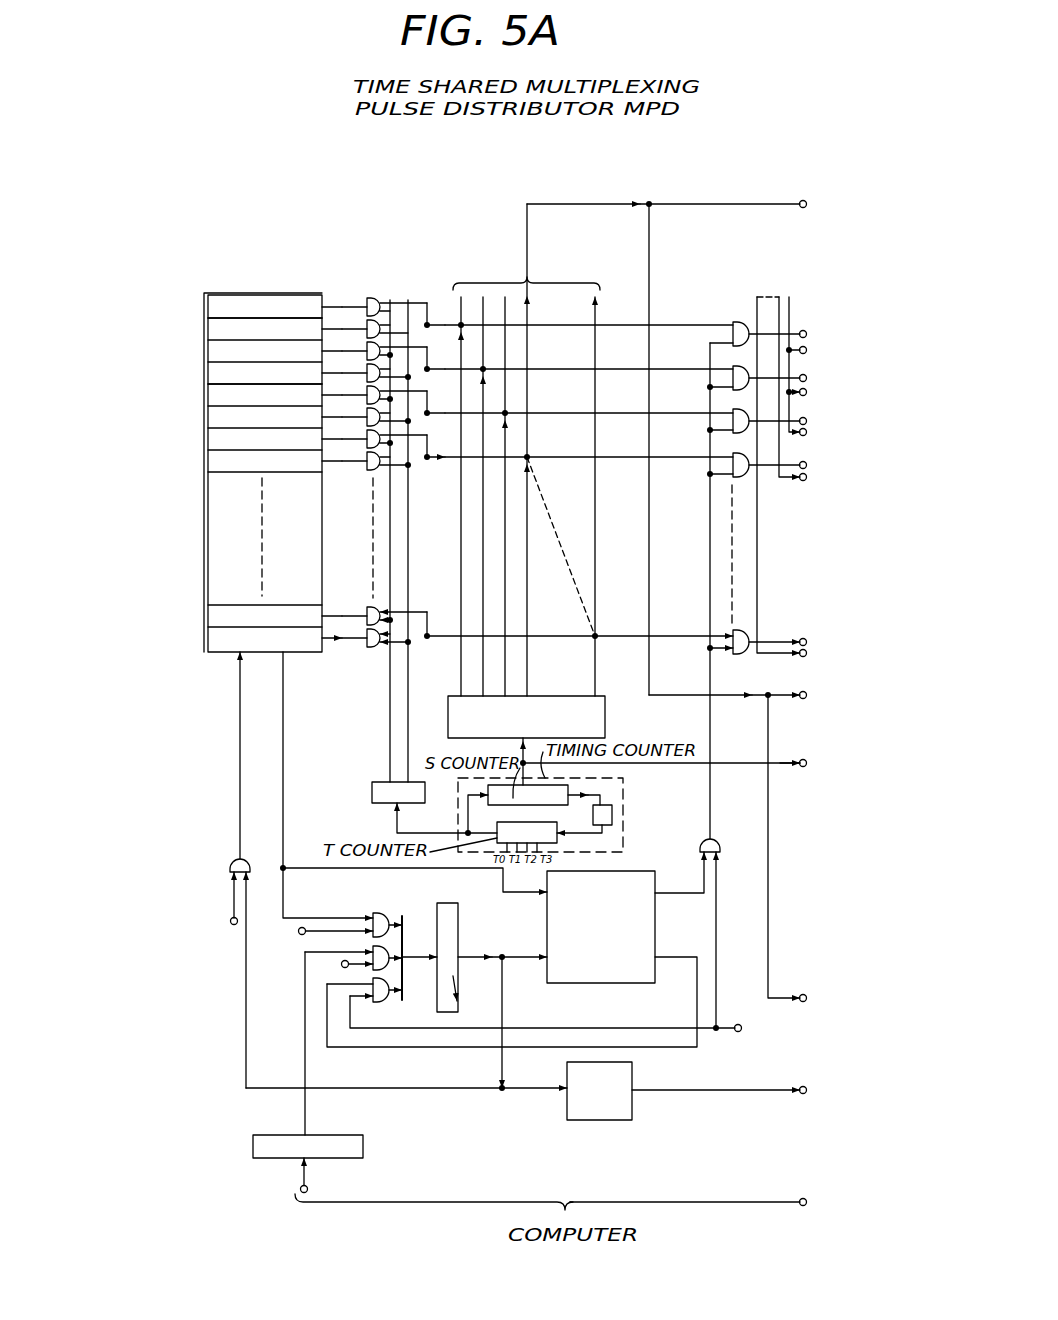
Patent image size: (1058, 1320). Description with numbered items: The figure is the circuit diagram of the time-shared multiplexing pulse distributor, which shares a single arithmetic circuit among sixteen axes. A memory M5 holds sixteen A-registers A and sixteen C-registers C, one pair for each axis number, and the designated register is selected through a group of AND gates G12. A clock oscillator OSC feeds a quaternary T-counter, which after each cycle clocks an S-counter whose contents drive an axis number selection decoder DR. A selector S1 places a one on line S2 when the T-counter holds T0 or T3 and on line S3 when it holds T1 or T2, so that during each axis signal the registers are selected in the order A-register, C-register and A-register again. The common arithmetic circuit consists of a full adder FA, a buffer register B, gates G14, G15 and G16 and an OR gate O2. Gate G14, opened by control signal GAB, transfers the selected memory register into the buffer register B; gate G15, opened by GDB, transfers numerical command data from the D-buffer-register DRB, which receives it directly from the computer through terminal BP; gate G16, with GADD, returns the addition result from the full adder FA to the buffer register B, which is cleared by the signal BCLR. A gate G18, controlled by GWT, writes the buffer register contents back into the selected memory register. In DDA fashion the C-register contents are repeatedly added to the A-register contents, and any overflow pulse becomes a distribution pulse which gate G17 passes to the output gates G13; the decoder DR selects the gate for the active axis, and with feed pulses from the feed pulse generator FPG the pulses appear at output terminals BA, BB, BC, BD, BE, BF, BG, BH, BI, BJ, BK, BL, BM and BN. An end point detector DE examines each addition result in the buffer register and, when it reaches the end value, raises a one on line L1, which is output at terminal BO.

The memory M5 is at (215, 443).
The A-register A is at (208, 306).
The C-register C is at (208, 372).
The group of AND-gates G12 is at (381, 460).
The line S2 is at (367, 545).
The line S3 is at (421, 549).
The axis number selection decoder DR is at (451, 488).
The selector S1 is at (355, 802).
The clock oscillator OSC is at (646, 803).
The group of gates G13 is at (730, 552).
The feed pulse generator FPG is at (792, 287).
The terminal BA is at (823, 205).
The terminal BB is at (823, 334).
The terminal BC is at (823, 352).
The terminal BD is at (824, 377).
The terminal BE is at (822, 394).
The terminal BF is at (822, 420).
The terminal BG is at (823, 436).
The terminal BH is at (824, 464).
The terminal BI is at (820, 480).
The terminal BJ is at (820, 642).
The terminal BK is at (824, 656).
The terminal BL is at (746, 696).
The terminal BM is at (815, 764).
The terminal BN is at (807, 852).
The terminal BO is at (824, 1091).
The terminal BP is at (708, 1203).
The gate G18 is at (199, 870).
The gate control signal GWT is at (208, 921).
The gate G14 is at (385, 915).
The gate control signal GAB is at (314, 933).
The gate G15 is at (372, 948).
The gate control signal GDB is at (339, 966).
The gate G16 is at (390, 1000).
The OR-gate O2 is at (405, 925).
The gate control signal GADD is at (751, 1030).
The buffer register B is at (460, 978).
The gate control signal BCLR is at (454, 1004).
The full adder FA is at (547, 940).
The gate G17 is at (716, 853).
The end point detector DE is at (618, 1093).
The line L1 is at (766, 1079).
The D-buffer-register DRB is at (392, 1161).